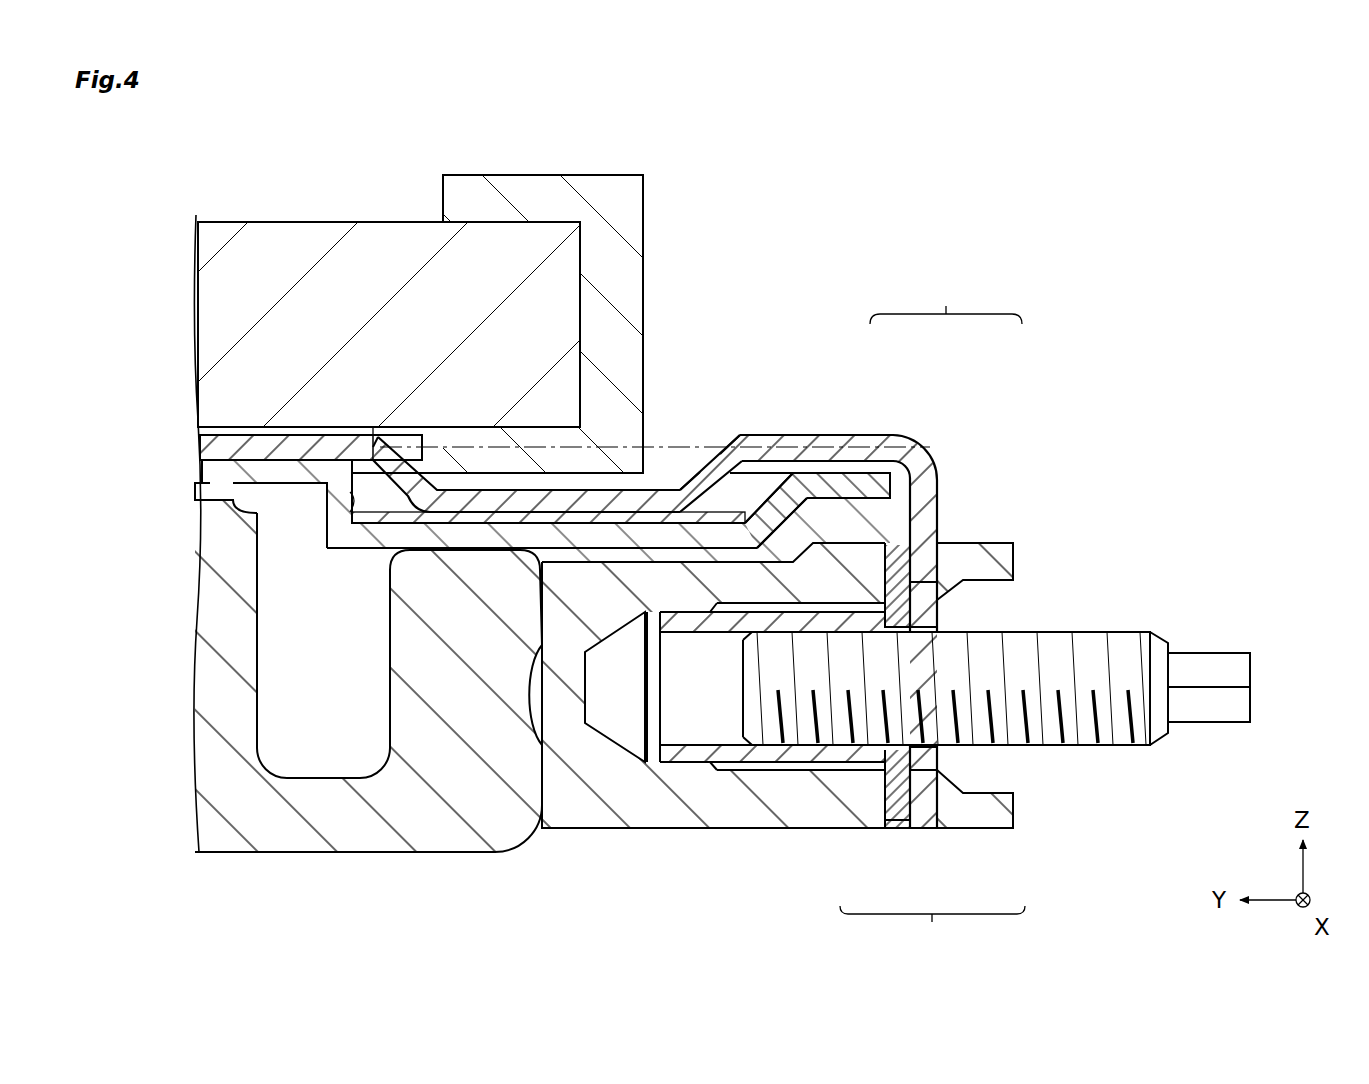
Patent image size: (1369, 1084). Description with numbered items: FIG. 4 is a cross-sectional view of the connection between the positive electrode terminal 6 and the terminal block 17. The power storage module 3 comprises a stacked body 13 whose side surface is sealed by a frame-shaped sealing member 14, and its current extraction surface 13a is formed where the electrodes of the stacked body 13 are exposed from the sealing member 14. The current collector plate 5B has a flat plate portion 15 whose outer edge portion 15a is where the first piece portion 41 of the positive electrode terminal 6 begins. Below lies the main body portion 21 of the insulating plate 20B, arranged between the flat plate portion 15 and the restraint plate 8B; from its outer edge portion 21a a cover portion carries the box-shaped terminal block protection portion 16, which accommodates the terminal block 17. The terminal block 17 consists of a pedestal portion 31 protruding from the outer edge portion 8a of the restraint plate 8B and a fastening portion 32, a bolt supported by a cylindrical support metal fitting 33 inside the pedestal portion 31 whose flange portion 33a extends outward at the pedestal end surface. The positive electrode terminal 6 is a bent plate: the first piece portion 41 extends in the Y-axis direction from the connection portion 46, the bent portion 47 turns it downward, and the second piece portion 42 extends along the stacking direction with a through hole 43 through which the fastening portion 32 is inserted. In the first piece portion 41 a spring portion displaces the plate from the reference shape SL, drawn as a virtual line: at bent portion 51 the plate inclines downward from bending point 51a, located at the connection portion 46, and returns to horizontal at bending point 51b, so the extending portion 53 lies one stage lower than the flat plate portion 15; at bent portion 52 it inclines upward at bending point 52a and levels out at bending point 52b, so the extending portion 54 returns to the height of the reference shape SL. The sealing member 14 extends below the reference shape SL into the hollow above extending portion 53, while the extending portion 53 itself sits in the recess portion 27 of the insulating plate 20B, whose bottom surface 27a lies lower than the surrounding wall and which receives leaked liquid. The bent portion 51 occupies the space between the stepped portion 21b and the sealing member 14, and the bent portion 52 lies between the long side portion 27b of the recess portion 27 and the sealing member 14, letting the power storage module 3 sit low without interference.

The power storage module 3 is at (188, 248).
The stacked body 13 is at (229, 219).
The current extraction surface 13a is at (335, 220).
The sealing member 14 is at (497, 172).
The flat plate portion 15 is at (243, 428).
The outer edge portion 15a is at (378, 428).
The current collector plate 5B is at (195, 446).
The insulating plate 20B is at (196, 470).
The main body portion 21 is at (282, 497).
The outer edge portion 21a is at (627, 550).
The stepped portion 21b is at (322, 540).
The terminal block protection portion 16 is at (382, 567).
The recess portion 27 is at (388, 512).
The bottom surface 27a is at (733, 523).
The long side portion 27b is at (780, 512).
The connection portion 46 is at (370, 446).
The bent portion 51 is at (385, 437).
The bending point 51a is at (377, 440).
The bending point 51b is at (436, 495).
The extending portion 53 is at (533, 505).
The bent portion 52 is at (742, 444).
The bending point 52a is at (684, 494).
The bending point 52b is at (757, 435).
The extending portion 54 is at (836, 430).
The first piece portion 41 is at (842, 430).
The second piece portion 42 is at (947, 516).
The bent portion 47 is at (926, 438).
The through hole 43 is at (940, 592).
The positive electrode terminal 6 is at (946, 302).
The reference shape SL is at (622, 443).
The restraint plate 8B is at (352, 855).
The outer edge portion 8a is at (549, 832).
The flange portion 33a is at (893, 830).
The support metal fitting 33 is at (745, 772).
The pedestal portion 31 is at (832, 832).
The fastening portion 32 is at (1085, 752).
The terminal block 17 is at (932, 931).